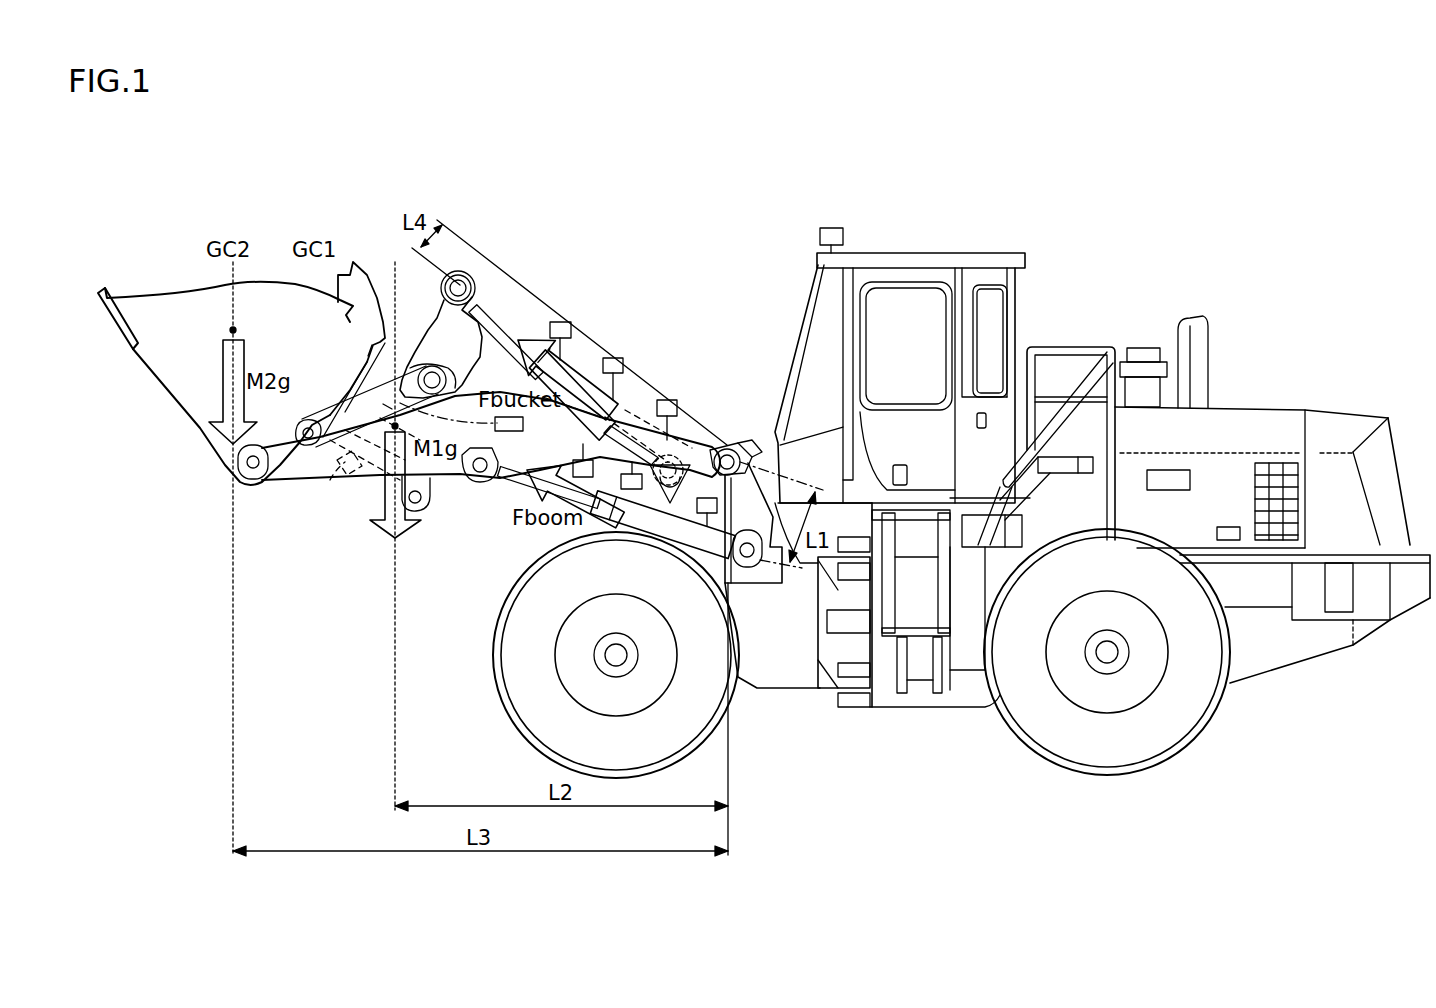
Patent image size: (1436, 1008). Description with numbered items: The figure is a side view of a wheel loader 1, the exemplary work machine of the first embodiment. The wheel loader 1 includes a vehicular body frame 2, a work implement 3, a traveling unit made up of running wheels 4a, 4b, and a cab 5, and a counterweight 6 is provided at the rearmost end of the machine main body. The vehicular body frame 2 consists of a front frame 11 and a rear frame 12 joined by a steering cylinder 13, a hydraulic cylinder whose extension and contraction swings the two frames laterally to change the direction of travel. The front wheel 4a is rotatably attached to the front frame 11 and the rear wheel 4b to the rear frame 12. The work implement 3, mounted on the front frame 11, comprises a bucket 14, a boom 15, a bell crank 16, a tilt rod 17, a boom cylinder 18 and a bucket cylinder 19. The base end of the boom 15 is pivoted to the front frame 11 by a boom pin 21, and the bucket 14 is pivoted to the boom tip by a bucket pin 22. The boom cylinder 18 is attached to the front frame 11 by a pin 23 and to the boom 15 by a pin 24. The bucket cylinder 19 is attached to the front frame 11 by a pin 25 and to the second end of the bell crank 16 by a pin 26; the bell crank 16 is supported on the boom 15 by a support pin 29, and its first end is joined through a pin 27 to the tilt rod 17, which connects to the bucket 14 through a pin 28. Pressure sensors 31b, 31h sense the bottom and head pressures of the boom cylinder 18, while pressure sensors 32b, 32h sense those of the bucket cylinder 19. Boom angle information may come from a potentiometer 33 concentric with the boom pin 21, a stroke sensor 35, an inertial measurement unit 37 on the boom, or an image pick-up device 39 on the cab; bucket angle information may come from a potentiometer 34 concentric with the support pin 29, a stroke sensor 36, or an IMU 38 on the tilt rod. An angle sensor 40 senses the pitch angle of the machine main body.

The wheel loader 1 is at (1152, 238).
The vehicular body frame 2 is at (899, 742).
The work implement 3 is at (479, 235).
The running wheel (front wheel) 4a is at (565, 728).
The running wheel (rear wheel) 4b is at (1106, 758).
The cab 5 is at (916, 253).
The counterweight 6 is at (1408, 590).
The front frame 11 is at (791, 668).
The rear frame 12 is at (962, 688).
The steering cylinder 13 is at (851, 625).
The bucket 14 is at (180, 380).
The boom 15 is at (453, 480).
The bell crank 16 is at (468, 322).
The tilt rod 17 is at (366, 490).
The boom cylinder 18 is at (502, 500).
The bucket cylinder 19 is at (514, 312).
The boom pin 21 is at (734, 443).
The bucket pin 22 is at (255, 480).
The pin 23 is at (746, 570).
The pin 24 is at (478, 484).
The pin 25 is at (672, 445).
The pin 26 is at (459, 271).
The pin 27 is at (418, 512).
The pin 28 is at (308, 447).
The support pin 29 is at (388, 405).
The pressure sensor 31b is at (707, 497).
The pressure sensor 31h is at (631, 472).
The pressure sensor 32b is at (667, 399).
The pressure sensor 32h is at (609, 357).
The potentiometer 33 is at (749, 452).
The potentiometer 34 is at (431, 363).
The stroke sensor 35 is at (585, 459).
The stroke sensor 36 is at (567, 320).
The inertial measurement unit 37 is at (370, 352).
The IMU 38 is at (334, 498).
The image pick-up device 39 is at (827, 227).
The angle sensor 40 is at (1192, 480).